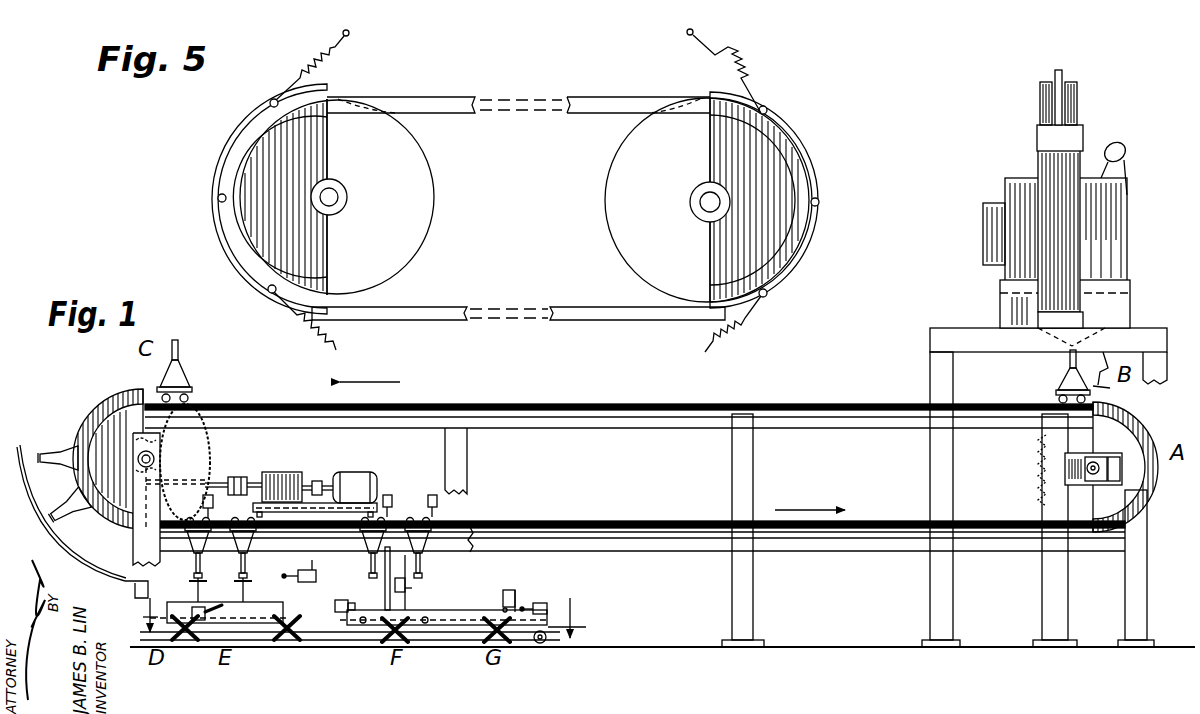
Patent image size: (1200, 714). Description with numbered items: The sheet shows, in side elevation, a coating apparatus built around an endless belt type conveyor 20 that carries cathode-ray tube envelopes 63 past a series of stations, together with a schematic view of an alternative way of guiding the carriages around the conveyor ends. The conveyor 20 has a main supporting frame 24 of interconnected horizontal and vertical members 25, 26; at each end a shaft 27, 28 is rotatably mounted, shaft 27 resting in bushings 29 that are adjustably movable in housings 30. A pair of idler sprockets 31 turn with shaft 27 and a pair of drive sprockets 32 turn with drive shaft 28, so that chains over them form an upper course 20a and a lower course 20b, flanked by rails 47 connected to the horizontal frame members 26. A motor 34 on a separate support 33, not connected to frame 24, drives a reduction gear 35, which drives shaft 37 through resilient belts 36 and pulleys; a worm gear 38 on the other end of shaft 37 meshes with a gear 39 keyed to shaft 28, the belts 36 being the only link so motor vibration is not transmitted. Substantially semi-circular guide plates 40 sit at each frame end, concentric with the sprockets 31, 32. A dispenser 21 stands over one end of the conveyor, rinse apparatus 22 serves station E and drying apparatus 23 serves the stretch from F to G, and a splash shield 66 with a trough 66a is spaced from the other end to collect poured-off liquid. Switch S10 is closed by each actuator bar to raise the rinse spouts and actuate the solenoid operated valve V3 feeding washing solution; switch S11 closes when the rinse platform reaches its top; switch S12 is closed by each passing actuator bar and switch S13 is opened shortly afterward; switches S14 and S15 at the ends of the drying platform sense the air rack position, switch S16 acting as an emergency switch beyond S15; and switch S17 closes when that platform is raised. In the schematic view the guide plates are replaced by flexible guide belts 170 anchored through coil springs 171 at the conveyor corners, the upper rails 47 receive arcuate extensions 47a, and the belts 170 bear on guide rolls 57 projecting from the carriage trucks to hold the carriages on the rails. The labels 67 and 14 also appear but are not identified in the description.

In FIG. 5, the endless belt type conveyor 20 is at (548, 93).
In FIG. 1, the upper course 20a is at (630, 400).
In FIG. 1, the lower course 20b is at (640, 520).
In FIG. 1, the dispenser 21 is at (1025, 163).
In FIG. 1, the rinse apparatus 22 is at (181, 598).
In FIG. 1, the drying apparatus 23 is at (466, 606).
In FIG. 1, the main supporting frame 24 is at (720, 436).
In FIG. 1, the frame member 25 is at (660, 548).
In FIG. 1, the horizontal frame member 26 is at (467, 456).
In FIG. 5, the shaft 27 is at (705, 199).
In FIG. 1, the shaft 27 is at (1085, 457).
In FIG. 5, the drive shaft 28 is at (340, 197).
In FIG. 1, the drive shaft 28 is at (151, 457).
In FIG. 1, the bushing 29 is at (1090, 478).
In FIG. 1, the housing 30 is at (1153, 497).
In FIG. 5, the idler sprocket 31 is at (608, 204).
In FIG. 1, the idler sprocket 31 is at (1034, 481).
In FIG. 5, the drive sprocket 32 is at (420, 200).
In FIG. 1, the drive sprocket 32 is at (227, 438).
In FIG. 1, the separate support 33 is at (330, 513).
In FIG. 1, the motor 34 is at (362, 472).
In FIG. 1, the reduction gear 35 is at (286, 472).
In FIG. 1, the resilient belts 36 is at (242, 477).
In FIG. 1, the shaft 37 is at (216, 482).
In FIG. 1, the worm gear 38 is at (169, 499).
In FIG. 1, the gear 39 is at (205, 446).
In FIG. 1, the semi-circular guide plate 40 is at (118, 428).
In FIG. 5, the rail 47 is at (432, 96).
In FIG. 5, the arcuate extension 47a is at (246, 153).
In FIG. 5, the guide roll 57 is at (268, 102).
In FIG. 1, the envelope 63 is at (181, 381).
In FIG. 1, the splash shield 66 is at (50, 546).
In FIG. 1, the trough 66a is at (136, 580).
In FIG. 1, the table 67 is at (1146, 337).
In FIG. 5, the guide belt 170 is at (276, 98).
In FIG. 5, the coil spring 171 is at (333, 51).
In FIG. 1, the switch S10 is at (226, 506).
In FIG. 1, the switch S11 is at (318, 576).
In FIG. 1, the switch S12 is at (388, 494).
In FIG. 1, the switch S13 is at (432, 494).
In FIG. 1, the switch S14 is at (335, 605).
In FIG. 1, the switch S15 is at (512, 596).
In FIG. 1, the switch S16 is at (546, 605).
In FIG. 1, the switch S17 is at (412, 588).
In FIG. 1, the solenoid operated valve V3 is at (200, 622).
In FIG. 1, the section line 14 is at (146, 617).